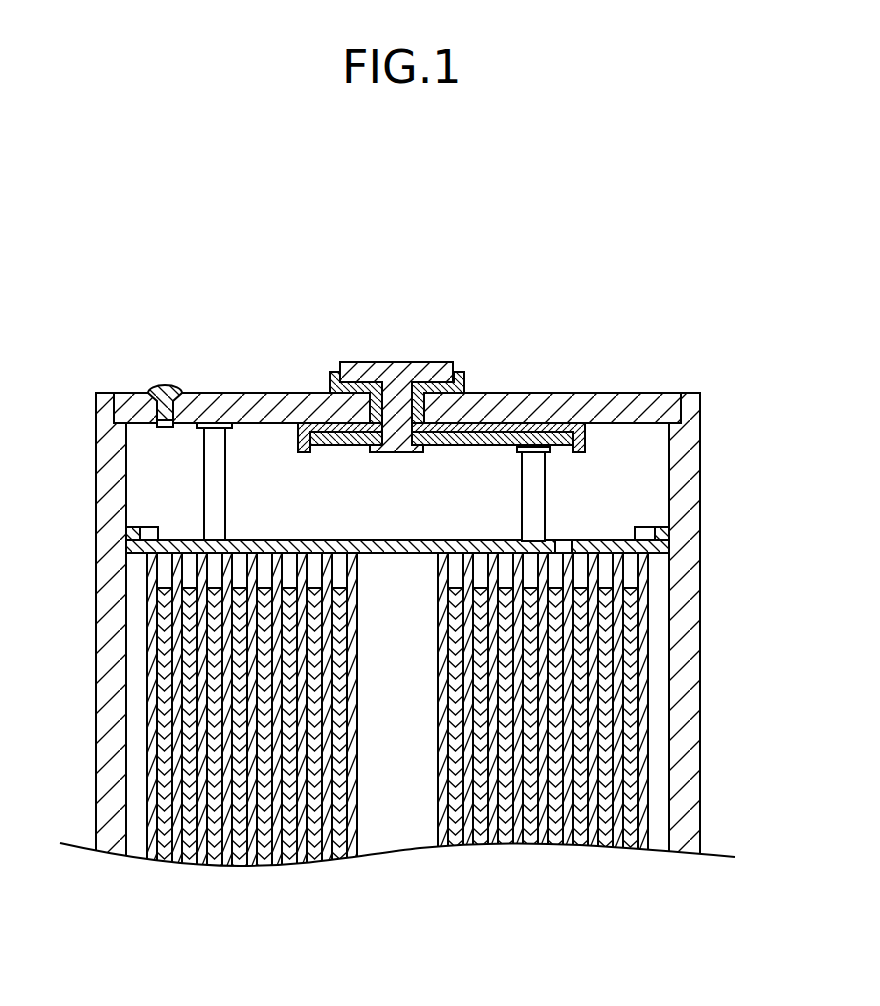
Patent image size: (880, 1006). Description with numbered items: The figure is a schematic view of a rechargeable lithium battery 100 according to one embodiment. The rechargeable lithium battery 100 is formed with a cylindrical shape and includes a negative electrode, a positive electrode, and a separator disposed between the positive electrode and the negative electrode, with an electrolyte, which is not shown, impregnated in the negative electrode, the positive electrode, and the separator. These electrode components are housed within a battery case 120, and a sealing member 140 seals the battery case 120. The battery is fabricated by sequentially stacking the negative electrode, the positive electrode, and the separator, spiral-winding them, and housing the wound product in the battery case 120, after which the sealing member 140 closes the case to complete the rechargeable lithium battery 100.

The rechargeable lithium battery 100 is at (536, 334).
The battery case 120 is at (680, 645).
The sealing member 140 is at (392, 370).